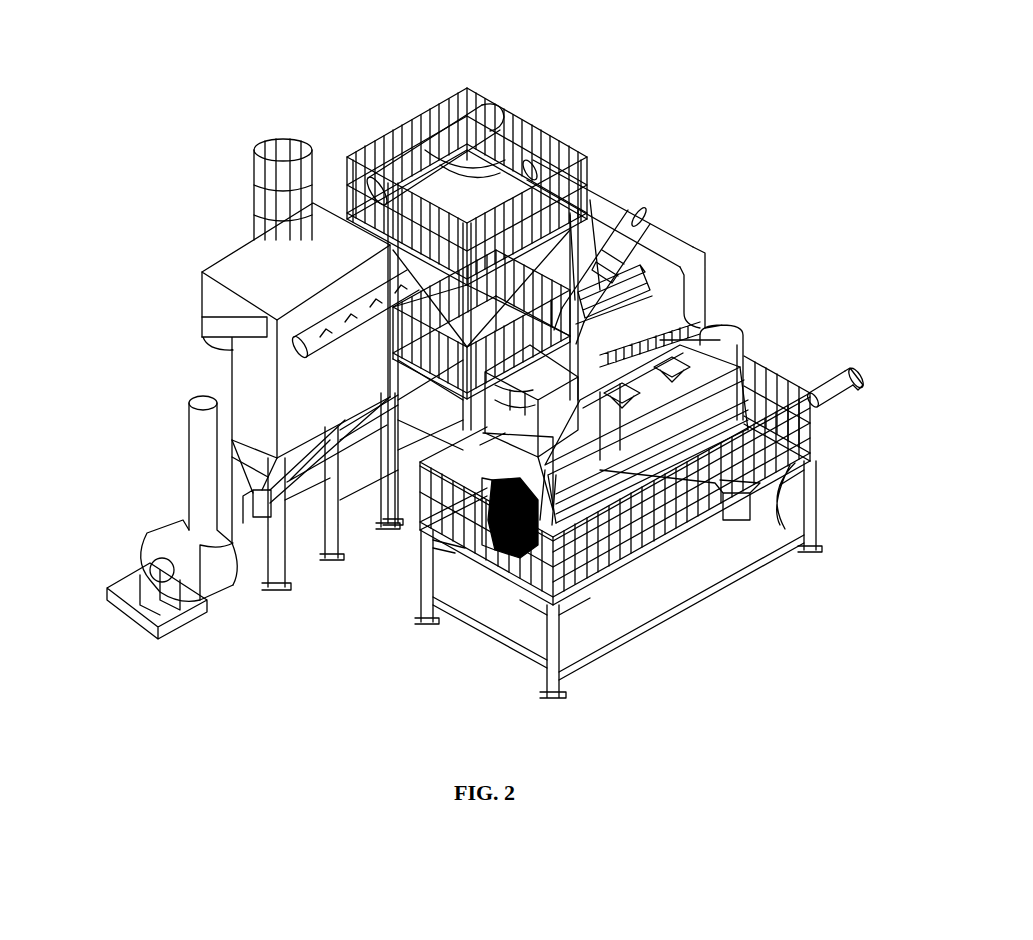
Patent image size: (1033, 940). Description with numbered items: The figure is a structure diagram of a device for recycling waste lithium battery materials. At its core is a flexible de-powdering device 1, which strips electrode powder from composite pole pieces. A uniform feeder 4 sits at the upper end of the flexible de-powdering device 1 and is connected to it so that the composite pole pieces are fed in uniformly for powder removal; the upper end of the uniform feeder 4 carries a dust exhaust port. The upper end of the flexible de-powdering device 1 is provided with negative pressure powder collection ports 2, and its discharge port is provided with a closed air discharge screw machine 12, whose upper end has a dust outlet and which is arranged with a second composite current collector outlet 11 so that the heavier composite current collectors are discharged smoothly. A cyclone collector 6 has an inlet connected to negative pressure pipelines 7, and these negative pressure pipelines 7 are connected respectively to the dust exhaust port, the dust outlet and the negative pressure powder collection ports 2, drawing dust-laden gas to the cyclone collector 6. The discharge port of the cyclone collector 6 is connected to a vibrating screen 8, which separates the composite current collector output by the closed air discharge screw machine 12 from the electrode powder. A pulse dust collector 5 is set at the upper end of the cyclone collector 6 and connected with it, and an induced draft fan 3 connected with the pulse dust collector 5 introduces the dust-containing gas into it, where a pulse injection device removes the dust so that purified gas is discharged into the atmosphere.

The flexible de-powdering device 1 is at (623, 443).
The negative pressure powder collection port 2 is at (807, 487).
The induced draft fan 3 is at (198, 482).
The uniform feeder 4 is at (558, 420).
The pulse dust collector 5 is at (280, 283).
The cyclone collector 6 is at (513, 132).
The negative pressure pipeline 7 is at (610, 207).
The vibrating screen 8 is at (620, 277).
The second composite current collector outlet 11 is at (850, 398).
The closed air discharge screw machine 12 is at (827, 397).